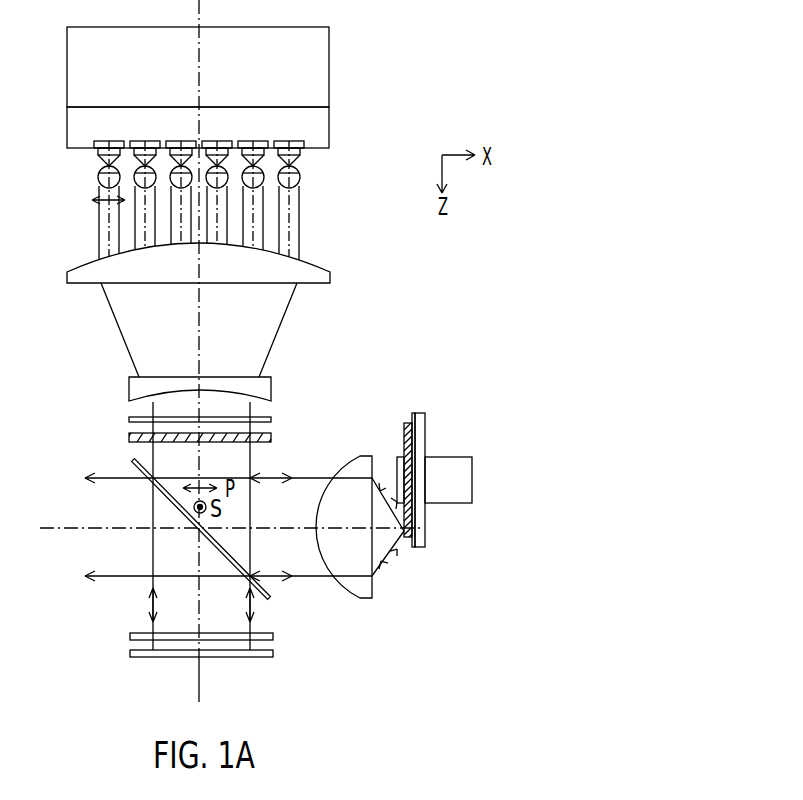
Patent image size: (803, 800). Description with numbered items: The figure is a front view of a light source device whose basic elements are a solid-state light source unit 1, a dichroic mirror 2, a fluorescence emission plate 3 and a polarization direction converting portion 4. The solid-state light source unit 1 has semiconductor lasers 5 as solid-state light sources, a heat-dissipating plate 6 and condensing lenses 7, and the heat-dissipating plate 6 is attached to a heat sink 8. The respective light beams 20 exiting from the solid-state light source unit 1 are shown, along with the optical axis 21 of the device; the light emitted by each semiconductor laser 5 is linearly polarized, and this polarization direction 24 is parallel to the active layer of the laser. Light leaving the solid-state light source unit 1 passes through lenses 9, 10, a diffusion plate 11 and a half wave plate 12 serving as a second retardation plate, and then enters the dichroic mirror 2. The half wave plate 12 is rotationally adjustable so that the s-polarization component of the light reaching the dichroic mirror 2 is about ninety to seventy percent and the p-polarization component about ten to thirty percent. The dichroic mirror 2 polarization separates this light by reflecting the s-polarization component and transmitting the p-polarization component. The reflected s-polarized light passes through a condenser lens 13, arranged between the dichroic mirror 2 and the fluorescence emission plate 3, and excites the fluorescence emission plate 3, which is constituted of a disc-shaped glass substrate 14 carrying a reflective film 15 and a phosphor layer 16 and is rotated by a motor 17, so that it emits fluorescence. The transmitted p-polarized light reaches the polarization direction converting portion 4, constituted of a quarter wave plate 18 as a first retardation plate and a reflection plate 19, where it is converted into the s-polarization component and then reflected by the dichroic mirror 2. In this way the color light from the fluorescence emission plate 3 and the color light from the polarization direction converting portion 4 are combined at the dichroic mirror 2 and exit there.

The solid-state light source unit 1 is at (230, 115).
The dichroic mirror 2 is at (272, 597).
The fluorescence emission plate 3 is at (429, 539).
The polarization direction converting portion 4 is at (158, 653).
The semiconductor laser 5 is at (304, 151).
The heat-dissipating plate 6 is at (320, 123).
The condensing lens 7 is at (229, 179).
The heat sink 8 is at (320, 68).
The lens 9 is at (330, 276).
The lens 10 is at (271, 384).
The diffusion plate 11 is at (271, 419).
The half wave plate 12 is at (271, 438).
The condenser lens 13 is at (368, 598).
The glass substrate 14 is at (421, 548).
The reflective film 15 is at (414, 548).
The phosphor layer 16 is at (407, 538).
The motor 17 is at (440, 503).
The quarter wave plate 18 is at (130, 636).
The reflection plate 19 is at (130, 655).
The light beam 20 is at (300, 216).
The optical axis 21 is at (200, 678).
The polarization direction 24 is at (108, 205).